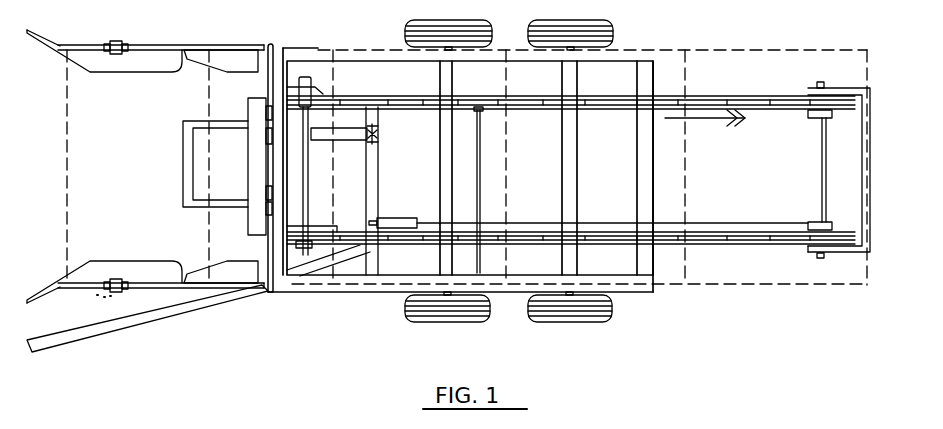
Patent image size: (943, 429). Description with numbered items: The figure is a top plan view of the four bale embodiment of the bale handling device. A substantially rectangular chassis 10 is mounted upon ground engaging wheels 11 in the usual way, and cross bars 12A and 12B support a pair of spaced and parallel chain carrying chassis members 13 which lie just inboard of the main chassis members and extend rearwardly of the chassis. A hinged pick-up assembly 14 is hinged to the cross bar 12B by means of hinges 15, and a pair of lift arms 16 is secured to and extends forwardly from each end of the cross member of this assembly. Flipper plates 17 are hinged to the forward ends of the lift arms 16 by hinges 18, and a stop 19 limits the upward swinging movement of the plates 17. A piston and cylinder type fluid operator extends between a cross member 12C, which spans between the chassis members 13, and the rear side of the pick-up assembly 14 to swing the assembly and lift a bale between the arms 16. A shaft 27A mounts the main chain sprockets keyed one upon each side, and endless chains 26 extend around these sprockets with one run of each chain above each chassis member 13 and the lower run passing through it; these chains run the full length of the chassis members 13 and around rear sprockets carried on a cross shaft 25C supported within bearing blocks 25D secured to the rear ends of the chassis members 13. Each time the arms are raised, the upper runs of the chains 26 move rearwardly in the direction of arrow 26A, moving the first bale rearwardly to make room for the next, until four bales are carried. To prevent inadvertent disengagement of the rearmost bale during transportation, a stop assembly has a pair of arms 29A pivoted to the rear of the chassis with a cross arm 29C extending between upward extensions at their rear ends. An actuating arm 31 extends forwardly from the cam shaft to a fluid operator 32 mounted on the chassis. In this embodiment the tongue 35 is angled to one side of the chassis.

The chassis 10 is at (356, 39).
The ground engaging wheels 11 is at (430, 20).
The cross bar 12A is at (642, 127).
The cross bar 12B is at (268, 290).
The cross member 12C is at (372, 195).
The chain carrying chassis members 13 is at (557, 108).
The hinged pick-up assembly 14 is at (257, 147).
The hinges 15 is at (265, 113).
The lift arms 16 is at (238, 55).
The flipper plates 17 is at (82, 68).
The hinges 18 is at (98, 45).
The stop 19 is at (118, 42).
The cross shaft 25C is at (820, 168).
The bearing blocks 25D is at (815, 118).
The endless chains 26 is at (683, 99).
The arrow 26A is at (676, 120).
The shaft 27A is at (306, 188).
The arms 29A is at (833, 253).
The cross arm 29C is at (872, 182).
The actuating arm 31 is at (773, 223).
The fluid operator 32 is at (373, 220).
The tongue 35 is at (83, 333).